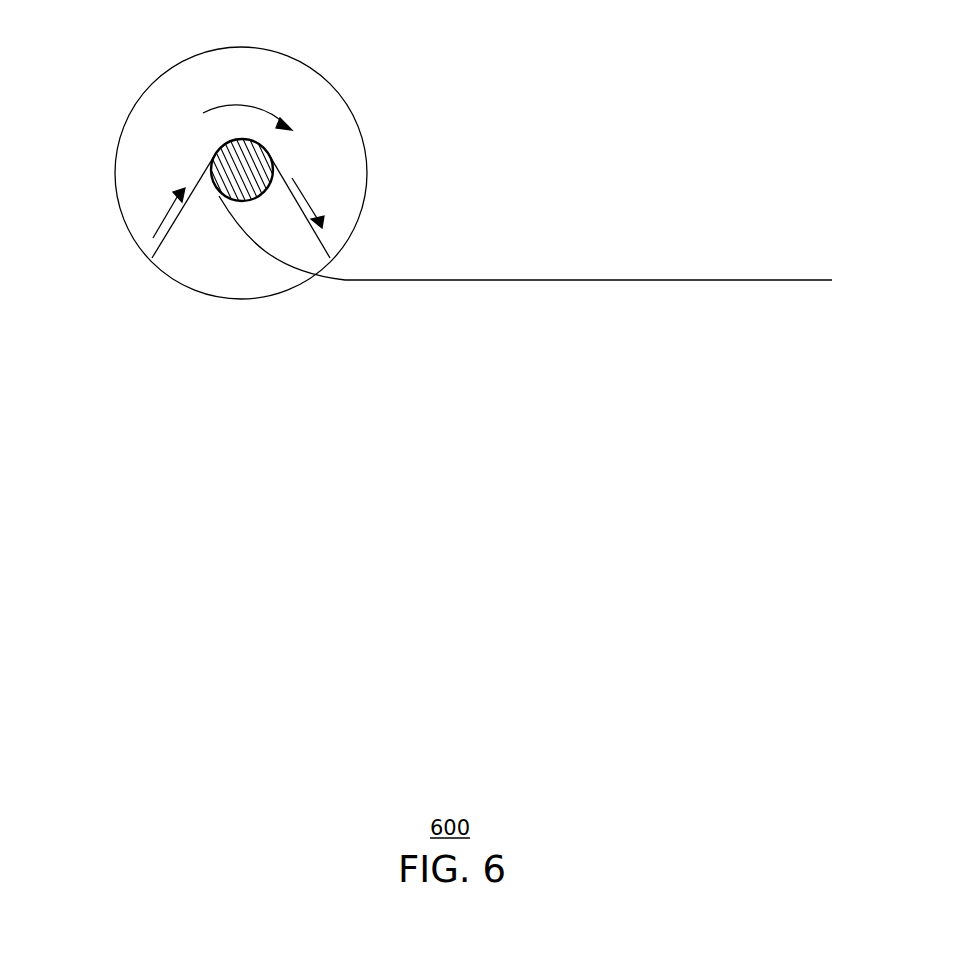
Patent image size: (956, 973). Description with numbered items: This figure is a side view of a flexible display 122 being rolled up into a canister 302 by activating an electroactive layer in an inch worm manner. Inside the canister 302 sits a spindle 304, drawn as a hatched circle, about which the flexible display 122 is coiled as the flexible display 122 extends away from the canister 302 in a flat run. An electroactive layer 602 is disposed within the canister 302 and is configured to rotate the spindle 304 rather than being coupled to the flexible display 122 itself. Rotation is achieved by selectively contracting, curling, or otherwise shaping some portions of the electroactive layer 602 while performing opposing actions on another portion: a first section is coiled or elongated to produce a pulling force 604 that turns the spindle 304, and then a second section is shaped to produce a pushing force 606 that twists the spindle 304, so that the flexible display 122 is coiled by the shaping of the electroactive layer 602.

The canister 302 is at (186, 59).
The spindle 304 is at (233, 163).
The electroactive layer 602 is at (200, 168).
The pulling force 604 is at (307, 200).
The pushing force 606 is at (168, 213).
The flexible display 122 is at (765, 280).